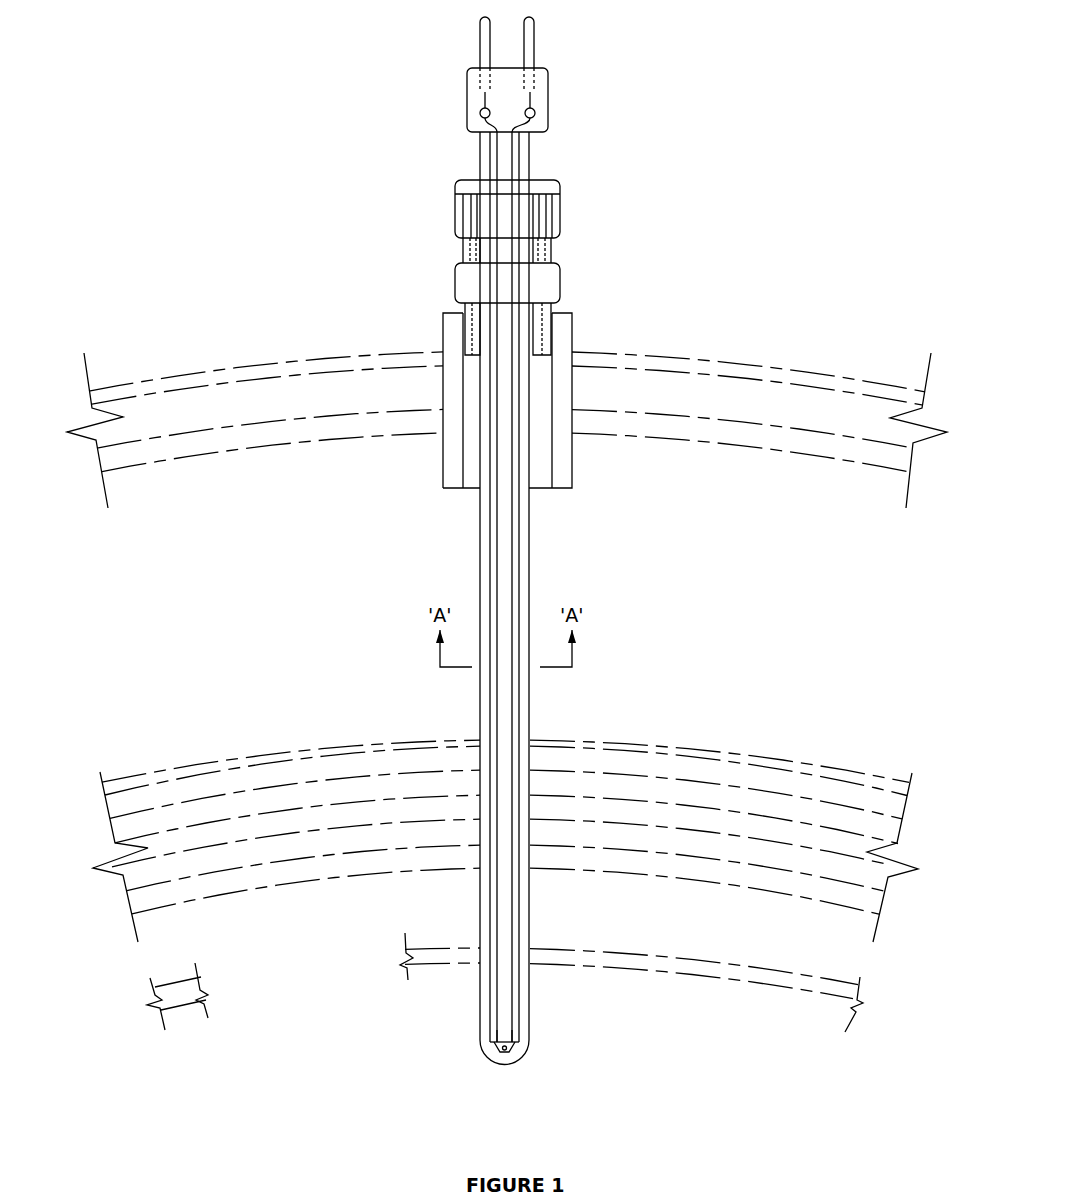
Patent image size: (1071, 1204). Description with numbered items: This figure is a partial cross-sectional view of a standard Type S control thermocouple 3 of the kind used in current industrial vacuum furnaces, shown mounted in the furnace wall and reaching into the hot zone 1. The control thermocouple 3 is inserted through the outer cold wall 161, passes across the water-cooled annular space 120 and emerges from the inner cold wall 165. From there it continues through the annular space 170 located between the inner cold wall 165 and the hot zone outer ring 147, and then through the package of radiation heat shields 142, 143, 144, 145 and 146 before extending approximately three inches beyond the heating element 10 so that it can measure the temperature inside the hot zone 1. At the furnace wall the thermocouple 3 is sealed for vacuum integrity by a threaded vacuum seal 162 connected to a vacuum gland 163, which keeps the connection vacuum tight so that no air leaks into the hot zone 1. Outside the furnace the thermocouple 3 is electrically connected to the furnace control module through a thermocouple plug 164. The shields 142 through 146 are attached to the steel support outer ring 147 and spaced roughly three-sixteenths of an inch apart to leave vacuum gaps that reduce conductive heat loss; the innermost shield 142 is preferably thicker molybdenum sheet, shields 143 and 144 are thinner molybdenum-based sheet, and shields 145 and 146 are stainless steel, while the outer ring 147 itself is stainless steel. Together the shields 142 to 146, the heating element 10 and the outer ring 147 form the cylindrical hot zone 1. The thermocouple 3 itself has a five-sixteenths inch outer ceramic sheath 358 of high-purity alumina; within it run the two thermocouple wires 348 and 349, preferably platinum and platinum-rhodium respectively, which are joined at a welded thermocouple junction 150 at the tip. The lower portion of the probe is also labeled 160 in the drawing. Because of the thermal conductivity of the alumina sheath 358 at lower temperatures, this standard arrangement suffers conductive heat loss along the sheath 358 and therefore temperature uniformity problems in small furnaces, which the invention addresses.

The hot zone 1 is at (636, 1106).
The control thermocouple 3 is at (535, 157).
The heating element 10 is at (683, 975).
The water-cooled annular space 120 is at (707, 406).
The radiation heat shield 142 is at (303, 883).
The radiation heat shield 143 is at (268, 863).
The radiation heat shield 144 is at (228, 847).
The radiation heat shield 145 is at (190, 833).
The radiation heat shield 146 is at (153, 810).
The hot zone outer ring 147 is at (135, 780).
The welded thermocouple junction 150 is at (502, 1050).
The protective sheath 160 is at (518, 998).
The outer cold wall 161 is at (262, 358).
The threaded vacuum seal 162 is at (462, 322).
The vacuum gland 163 is at (455, 210).
The thermocouple plug 164 is at (465, 88).
The inner cold wall 165 is at (237, 455).
The annular space 170 is at (770, 605).
The thermocouple wire 348 is at (498, 523).
The thermocouple wire 349 is at (510, 550).
The outer ceramic sheath 358 is at (530, 550).